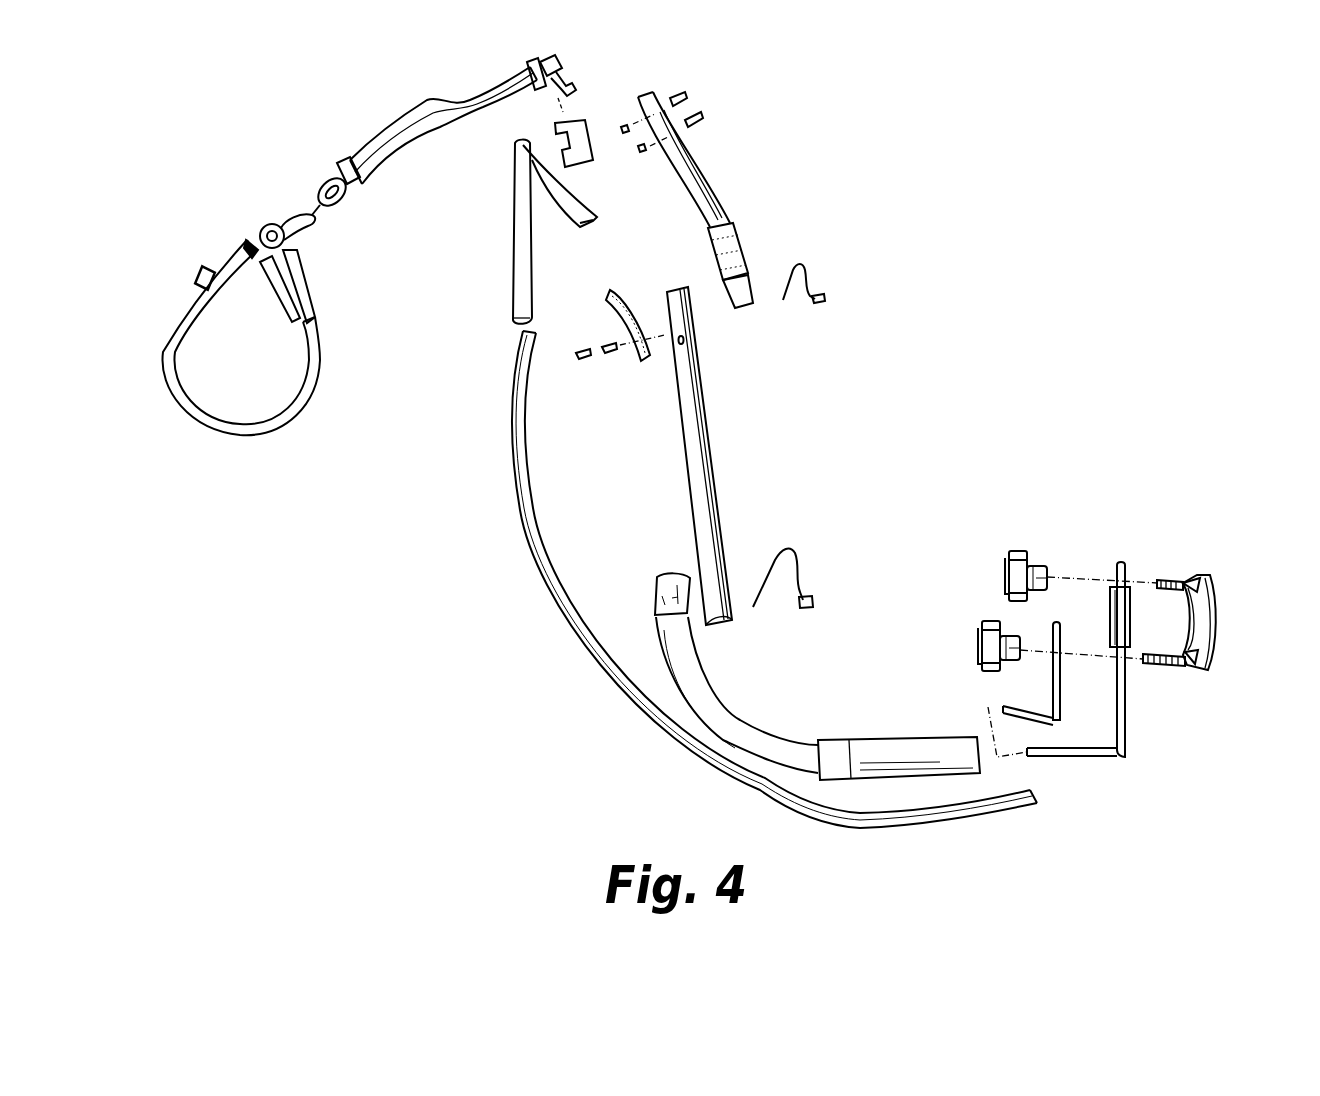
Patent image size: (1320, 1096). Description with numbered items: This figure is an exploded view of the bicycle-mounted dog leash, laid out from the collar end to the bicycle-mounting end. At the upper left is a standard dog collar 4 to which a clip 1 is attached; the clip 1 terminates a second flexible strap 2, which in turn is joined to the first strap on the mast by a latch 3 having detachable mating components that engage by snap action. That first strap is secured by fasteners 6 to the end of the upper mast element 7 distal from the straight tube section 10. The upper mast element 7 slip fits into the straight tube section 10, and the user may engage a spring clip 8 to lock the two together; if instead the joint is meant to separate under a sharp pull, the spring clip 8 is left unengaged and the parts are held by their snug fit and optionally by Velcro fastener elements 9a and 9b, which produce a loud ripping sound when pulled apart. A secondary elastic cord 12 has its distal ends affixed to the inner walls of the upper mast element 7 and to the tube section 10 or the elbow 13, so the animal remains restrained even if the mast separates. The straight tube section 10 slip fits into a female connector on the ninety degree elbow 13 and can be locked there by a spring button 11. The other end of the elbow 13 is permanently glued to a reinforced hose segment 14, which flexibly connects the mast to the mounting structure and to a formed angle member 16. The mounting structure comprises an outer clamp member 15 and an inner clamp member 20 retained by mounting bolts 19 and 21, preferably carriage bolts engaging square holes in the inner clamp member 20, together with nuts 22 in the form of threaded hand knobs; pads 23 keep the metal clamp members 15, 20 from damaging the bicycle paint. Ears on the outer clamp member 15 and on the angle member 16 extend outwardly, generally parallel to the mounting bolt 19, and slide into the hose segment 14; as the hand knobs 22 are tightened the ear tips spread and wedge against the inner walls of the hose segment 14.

The clip 1 is at (290, 220).
The second flexible strap 2 is at (375, 148).
The latch 3 is at (550, 72).
The dog collar 4 is at (183, 407).
The fasteners 6 is at (704, 110).
The upper mast element 7 is at (703, 168).
The spring clip 8 is at (803, 270).
The Velcro fastener element 9a is at (730, 243).
The Velcro fastener element 9b is at (631, 290).
The straight tube section 10 is at (693, 427).
The spring button 11 is at (800, 543).
The secondary elastic cord 12 is at (523, 518).
The 90 degree elbow 13 is at (730, 717).
The reinforced hose segment 14 is at (907, 747).
The outer clamp member 15 is at (1123, 698).
The formed angle member 16 is at (1050, 687).
The mounting bolt 19 is at (1160, 667).
The inner clamp member 20 is at (1210, 617).
The mounting bolt 21 is at (1160, 577).
The nuts 22 is at (1007, 570).
The pads 23 is at (1117, 590).